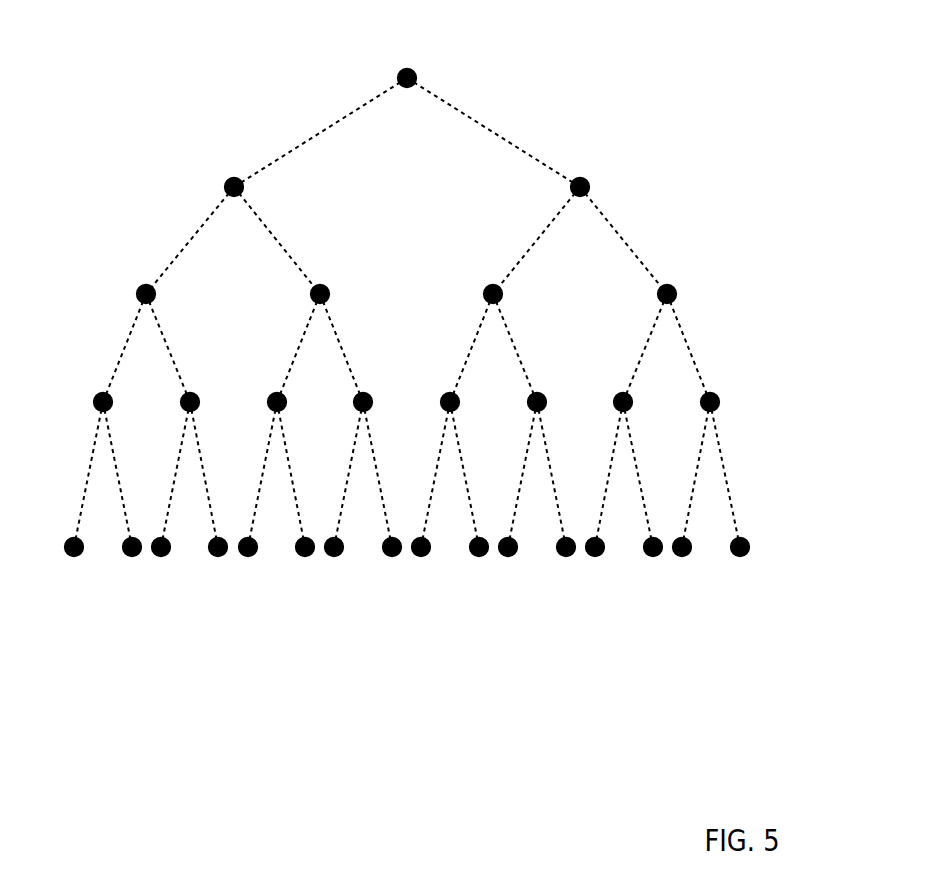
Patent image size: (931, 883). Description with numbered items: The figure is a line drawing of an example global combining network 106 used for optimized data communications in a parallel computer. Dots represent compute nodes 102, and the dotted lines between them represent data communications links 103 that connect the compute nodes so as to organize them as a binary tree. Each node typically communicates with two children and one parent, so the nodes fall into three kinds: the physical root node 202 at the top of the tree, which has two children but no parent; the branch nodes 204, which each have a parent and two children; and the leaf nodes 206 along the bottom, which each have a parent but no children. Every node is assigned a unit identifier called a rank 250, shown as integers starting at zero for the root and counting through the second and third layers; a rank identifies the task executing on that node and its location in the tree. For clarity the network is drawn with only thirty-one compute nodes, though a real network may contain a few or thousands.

The global combining network 106 is at (196, 652).
The data communications links 103 is at (330, 125).
The physical root node 202 is at (432, 64).
The branch nodes 204 is at (760, 137).
The leaf nodes 206 is at (460, 630).
The compute nodes 102 is at (477, 554).
The rank 250 is at (533, 199).